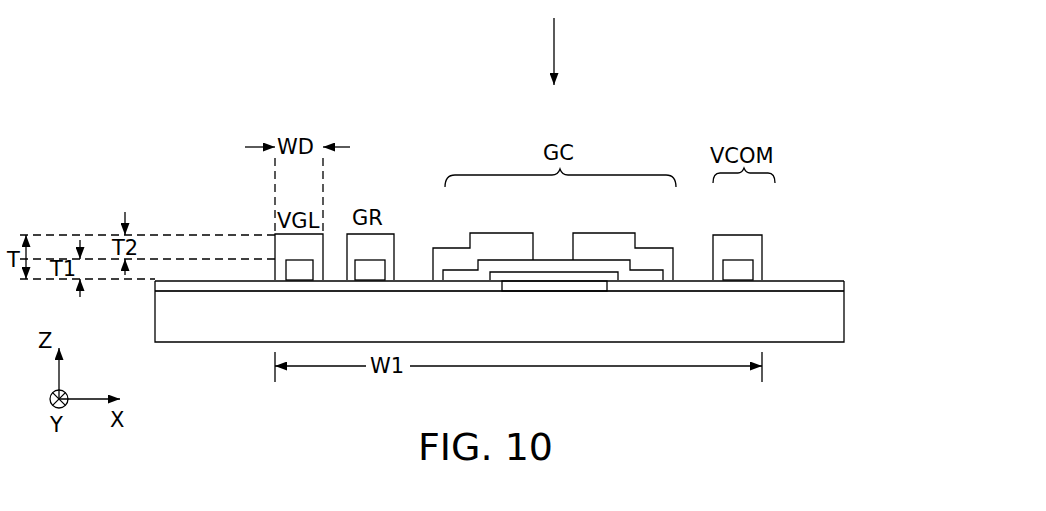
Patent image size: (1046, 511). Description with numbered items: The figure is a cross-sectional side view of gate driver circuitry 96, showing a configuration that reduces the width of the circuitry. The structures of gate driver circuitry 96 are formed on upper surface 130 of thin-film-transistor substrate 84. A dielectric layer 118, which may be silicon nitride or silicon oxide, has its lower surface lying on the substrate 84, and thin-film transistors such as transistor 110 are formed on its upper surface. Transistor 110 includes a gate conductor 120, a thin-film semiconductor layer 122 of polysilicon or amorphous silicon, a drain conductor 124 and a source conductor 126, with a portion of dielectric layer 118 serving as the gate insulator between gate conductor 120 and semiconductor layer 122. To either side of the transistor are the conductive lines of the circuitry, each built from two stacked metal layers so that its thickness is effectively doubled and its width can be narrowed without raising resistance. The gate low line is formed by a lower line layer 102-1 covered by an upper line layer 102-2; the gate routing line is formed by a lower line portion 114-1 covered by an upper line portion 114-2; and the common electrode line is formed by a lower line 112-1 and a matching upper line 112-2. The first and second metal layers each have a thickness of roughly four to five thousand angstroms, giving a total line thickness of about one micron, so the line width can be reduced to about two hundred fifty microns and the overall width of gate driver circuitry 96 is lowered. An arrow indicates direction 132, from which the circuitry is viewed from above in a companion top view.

The thin-film-transistor substrate 84 is at (844, 317).
The gate driver circuitry 96 is at (710, 72).
The lower line layer 102-1 is at (292, 268).
The upper line layer 102-2 is at (283, 242).
The transistor 110 is at (577, 212).
The lower line layer 112-1 is at (740, 268).
The upper line layer 112-2 is at (745, 243).
The lower line portion 114-1 is at (373, 269).
The upper line portion 114-2 is at (380, 242).
The dielectric layer 118 is at (833, 277).
The gate conductor 120 is at (557, 289).
The thin-film semiconductor layer 122 is at (613, 265).
The drain conductor 124 is at (502, 238).
The source conductor 126 is at (580, 247).
The upper surface 130 is at (808, 292).
The direction 132 is at (557, 52).